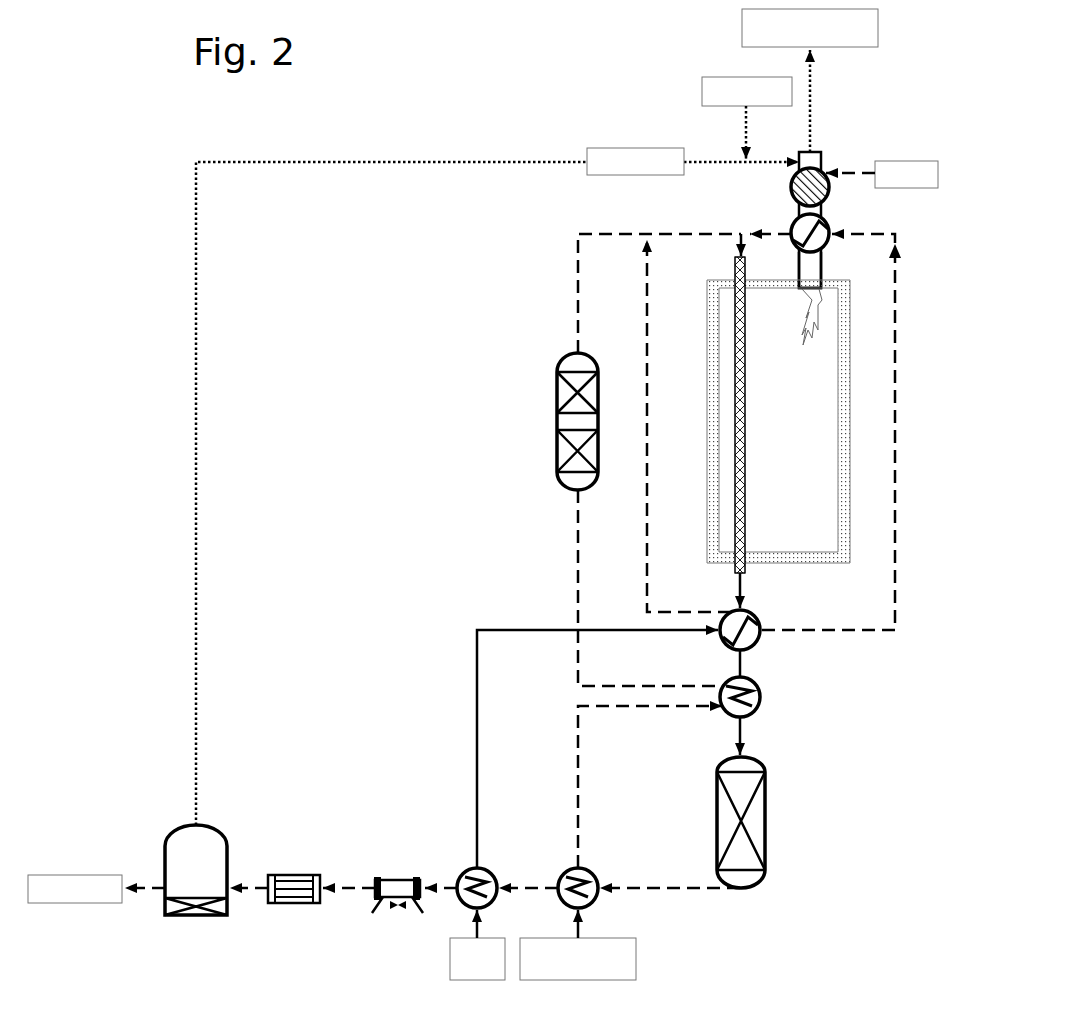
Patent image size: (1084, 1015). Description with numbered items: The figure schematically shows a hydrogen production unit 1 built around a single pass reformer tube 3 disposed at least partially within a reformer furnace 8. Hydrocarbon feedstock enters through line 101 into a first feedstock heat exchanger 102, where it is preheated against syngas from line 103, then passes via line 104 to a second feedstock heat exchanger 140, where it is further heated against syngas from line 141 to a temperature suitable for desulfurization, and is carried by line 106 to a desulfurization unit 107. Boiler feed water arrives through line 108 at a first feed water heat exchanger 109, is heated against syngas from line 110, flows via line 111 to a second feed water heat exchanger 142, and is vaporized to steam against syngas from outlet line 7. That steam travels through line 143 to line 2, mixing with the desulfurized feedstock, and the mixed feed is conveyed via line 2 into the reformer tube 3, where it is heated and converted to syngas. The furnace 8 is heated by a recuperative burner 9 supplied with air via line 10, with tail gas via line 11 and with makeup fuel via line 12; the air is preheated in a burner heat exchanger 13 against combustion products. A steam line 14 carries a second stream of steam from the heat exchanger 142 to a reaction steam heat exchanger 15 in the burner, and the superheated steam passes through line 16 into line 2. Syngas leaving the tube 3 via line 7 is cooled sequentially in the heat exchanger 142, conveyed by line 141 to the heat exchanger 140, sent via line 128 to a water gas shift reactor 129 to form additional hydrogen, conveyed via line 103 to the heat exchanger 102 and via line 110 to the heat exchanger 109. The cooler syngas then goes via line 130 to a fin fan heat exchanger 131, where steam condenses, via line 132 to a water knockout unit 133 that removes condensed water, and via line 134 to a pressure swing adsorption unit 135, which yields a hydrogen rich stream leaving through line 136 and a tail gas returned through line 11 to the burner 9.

The hydrogen production unit 1 is at (150, 146).
The mixed feed line 2 is at (703, 234).
The single pass reformer tube 3 is at (745, 373).
The outlet line 7 is at (741, 583).
The reformer furnace 8 is at (823, 413).
The recuperative burner 9 is at (821, 260).
The air line 10 is at (838, 168).
The tail gas line 11 is at (457, 162).
The makeup fuel line 12 is at (746, 140).
The burner heat exchanger 13 is at (829, 187).
The steam line 14 is at (895, 295).
The reaction steam heat exchanger 15 is at (828, 226).
The superheated steam line 16 is at (770, 234).
The hydrocarbon feedstock line 101 is at (590, 915).
The first feedstock heat exchanger 102 is at (588, 872).
The shifted syngas line 103 is at (640, 888).
The preheated feedstock line 104 is at (578, 742).
The heated feedstock line 106 is at (578, 655).
The desulfurization unit 107 is at (557, 400).
The boiler feed water line 108 is at (477, 920).
The first feed water heat exchanger 109 is at (490, 872).
The syngas line to first feed water heat exchanger 110 is at (510, 888).
The heated feed water line 111 is at (477, 732).
The syngas line to shift reactor 128 is at (745, 735).
The water gas shift reactor 129 is at (765, 795).
The syngas line to fin fan 130 is at (452, 885).
The fin fan heat exchanger 131 is at (385, 906).
The syngas line to knockout 132 is at (338, 888).
The water knockout unit 133 is at (273, 903).
The dry syngas line 134 is at (243, 888).
The pressure swing adsorption unit 135 is at (176, 828).
The hydrogen product line 136 is at (150, 886).
The second feedstock heat exchanger 140 is at (760, 690).
The syngas line to second feedstock heat exchanger 141 is at (740, 676).
The second feed water heat exchanger 142 is at (755, 615).
The steam line to mixed feed 143 is at (647, 275).